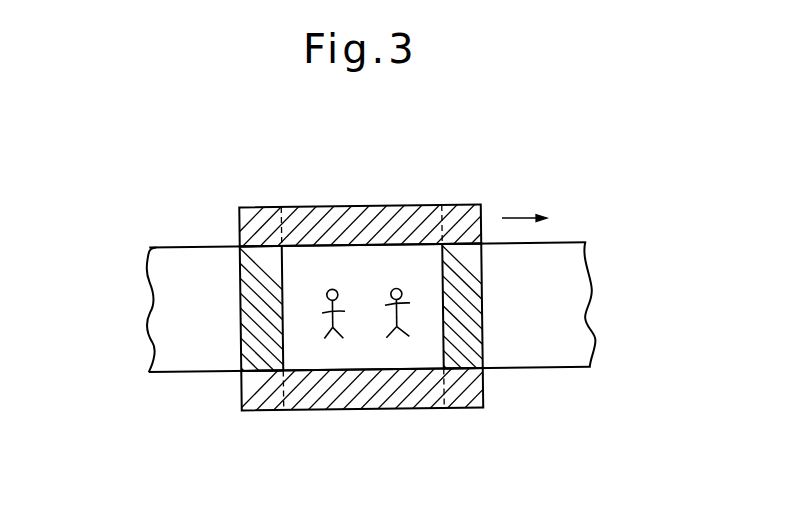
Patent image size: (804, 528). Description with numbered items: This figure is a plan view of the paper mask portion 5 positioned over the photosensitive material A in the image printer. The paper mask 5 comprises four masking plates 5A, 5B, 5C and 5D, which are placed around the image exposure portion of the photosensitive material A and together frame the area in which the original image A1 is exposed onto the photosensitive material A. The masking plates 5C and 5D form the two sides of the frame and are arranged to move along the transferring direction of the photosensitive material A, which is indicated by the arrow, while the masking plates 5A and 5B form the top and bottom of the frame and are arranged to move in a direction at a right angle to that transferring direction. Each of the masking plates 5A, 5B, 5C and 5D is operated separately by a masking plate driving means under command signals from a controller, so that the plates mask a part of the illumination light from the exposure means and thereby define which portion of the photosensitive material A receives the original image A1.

The photosensitive material A is at (187, 238).
The original image A1 is at (372, 278).
The paper mask portion 5 is at (396, 296).
The masking plate 5A is at (347, 221).
The masking plate 5B is at (398, 396).
The masking plate 5C is at (241, 354).
The masking plate 5D is at (476, 340).